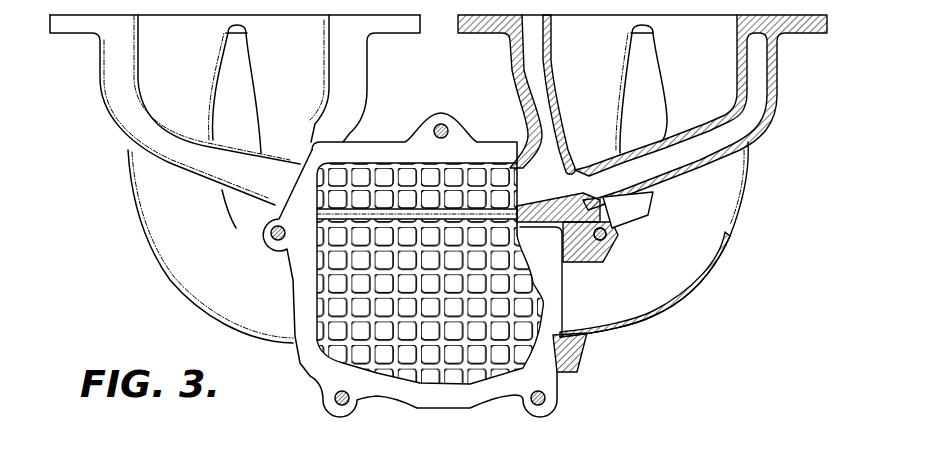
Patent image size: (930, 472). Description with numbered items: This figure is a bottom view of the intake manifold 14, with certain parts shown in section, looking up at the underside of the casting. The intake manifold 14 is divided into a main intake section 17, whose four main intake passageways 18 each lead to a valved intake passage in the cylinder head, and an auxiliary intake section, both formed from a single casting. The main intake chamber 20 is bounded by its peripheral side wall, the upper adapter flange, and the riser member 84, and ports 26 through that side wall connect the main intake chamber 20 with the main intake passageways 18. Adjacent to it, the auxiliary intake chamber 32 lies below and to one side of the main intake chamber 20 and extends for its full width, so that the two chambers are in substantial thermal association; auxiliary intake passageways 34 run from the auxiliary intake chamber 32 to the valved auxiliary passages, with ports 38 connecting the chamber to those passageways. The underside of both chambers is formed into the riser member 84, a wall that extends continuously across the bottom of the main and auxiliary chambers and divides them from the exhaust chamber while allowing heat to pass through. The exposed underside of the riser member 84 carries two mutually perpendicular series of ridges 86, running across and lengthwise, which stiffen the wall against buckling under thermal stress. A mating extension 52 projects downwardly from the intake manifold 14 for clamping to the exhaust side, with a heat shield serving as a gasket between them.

The intake manifold 14 is at (311, 384).
The main intake section 17 is at (147, 194).
The main intake passageways 18 is at (673, 278).
The main intake chamber 20 is at (550, 308).
The ports 26 is at (550, 268).
The auxiliary intake chamber 32 is at (527, 180).
The auxiliary intake passageways 34 is at (749, 99).
The ports 38 is at (592, 163).
The mating extension 52 is at (562, 358).
The riser member 84 is at (383, 177).
The ridges 86 is at (370, 187).